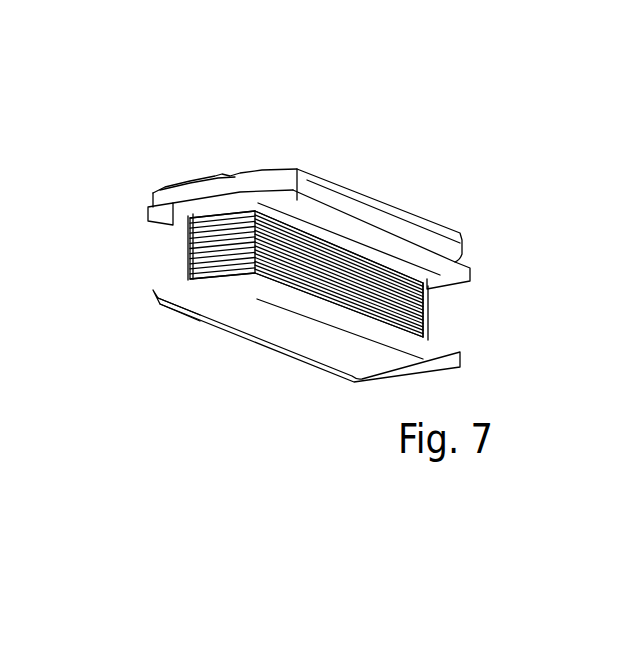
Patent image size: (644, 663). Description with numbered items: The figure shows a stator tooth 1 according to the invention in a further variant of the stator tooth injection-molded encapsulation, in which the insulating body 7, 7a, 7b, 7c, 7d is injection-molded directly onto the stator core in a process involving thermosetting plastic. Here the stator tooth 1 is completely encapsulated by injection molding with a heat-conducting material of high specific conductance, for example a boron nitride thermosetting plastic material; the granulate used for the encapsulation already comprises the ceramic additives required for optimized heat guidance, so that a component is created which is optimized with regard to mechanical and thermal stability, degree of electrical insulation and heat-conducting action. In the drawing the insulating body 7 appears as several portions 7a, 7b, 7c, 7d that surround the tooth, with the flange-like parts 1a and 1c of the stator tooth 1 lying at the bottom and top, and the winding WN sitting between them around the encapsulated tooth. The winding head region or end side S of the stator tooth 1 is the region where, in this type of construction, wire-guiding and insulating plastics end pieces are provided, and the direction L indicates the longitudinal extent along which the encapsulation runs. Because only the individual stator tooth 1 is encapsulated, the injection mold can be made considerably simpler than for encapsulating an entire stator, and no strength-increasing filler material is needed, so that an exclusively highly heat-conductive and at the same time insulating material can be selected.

The stator tooth 1 is at (143, 128).
The bottom flange 1a is at (300, 330).
The top flange 1c is at (240, 181).
The insulating body 7 is at (147, 308).
The insulating body 7a is at (190, 256).
The insulating body 7b is at (158, 300).
The insulating body 7c is at (147, 212).
The insulating body 7d is at (430, 300).
The end side S is at (165, 189).
The longitudinal direction L is at (368, 224).
The winding WN is at (430, 322).